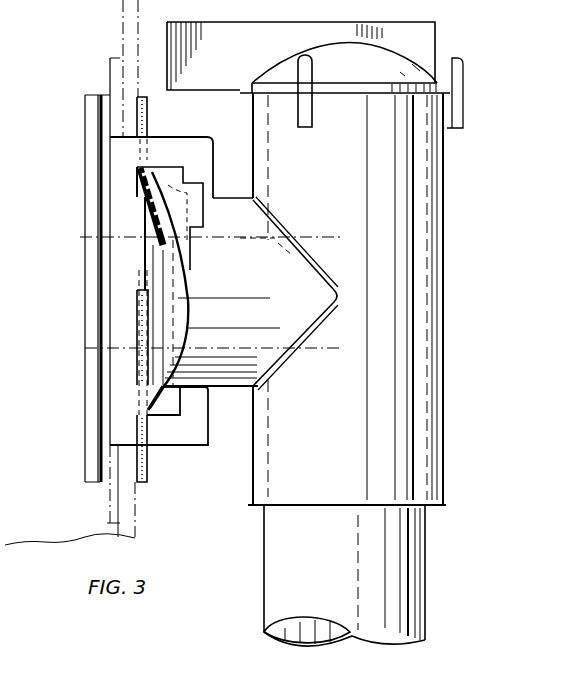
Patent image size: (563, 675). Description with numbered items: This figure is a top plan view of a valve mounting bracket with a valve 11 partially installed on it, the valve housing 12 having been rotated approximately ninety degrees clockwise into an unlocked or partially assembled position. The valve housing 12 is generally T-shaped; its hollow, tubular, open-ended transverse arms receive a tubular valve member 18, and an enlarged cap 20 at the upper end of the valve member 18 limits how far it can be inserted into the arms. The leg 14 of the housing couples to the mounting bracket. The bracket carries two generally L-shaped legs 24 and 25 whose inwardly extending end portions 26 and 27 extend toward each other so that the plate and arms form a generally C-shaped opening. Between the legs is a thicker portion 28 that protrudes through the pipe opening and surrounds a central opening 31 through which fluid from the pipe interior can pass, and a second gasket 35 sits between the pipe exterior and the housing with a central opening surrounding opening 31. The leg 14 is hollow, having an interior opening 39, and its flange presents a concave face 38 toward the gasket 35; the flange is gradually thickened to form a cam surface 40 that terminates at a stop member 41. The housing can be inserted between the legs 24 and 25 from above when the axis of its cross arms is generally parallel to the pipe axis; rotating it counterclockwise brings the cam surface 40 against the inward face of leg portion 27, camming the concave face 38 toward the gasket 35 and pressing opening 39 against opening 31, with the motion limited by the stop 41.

The valve 11 is at (481, 136).
The valve housing 12 is at (445, 292).
The leg 14 is at (240, 392).
The tubular valve member 18 is at (428, 557).
The enlarged cap 20 is at (405, 57).
The leg 24 is at (163, 137).
The leg 25 is at (168, 445).
The inwardly extending end portion 26 is at (213, 172).
The inwardly extending end portion 27 is at (210, 403).
The thicker portion 28 is at (118, 206).
The central opening 31 is at (92, 349).
The second gasket 35 is at (143, 483).
The concave face 38 is at (163, 273).
The interior opening 39 is at (232, 240).
The cam surface 40 is at (190, 282).
The stop member 41 is at (203, 208).